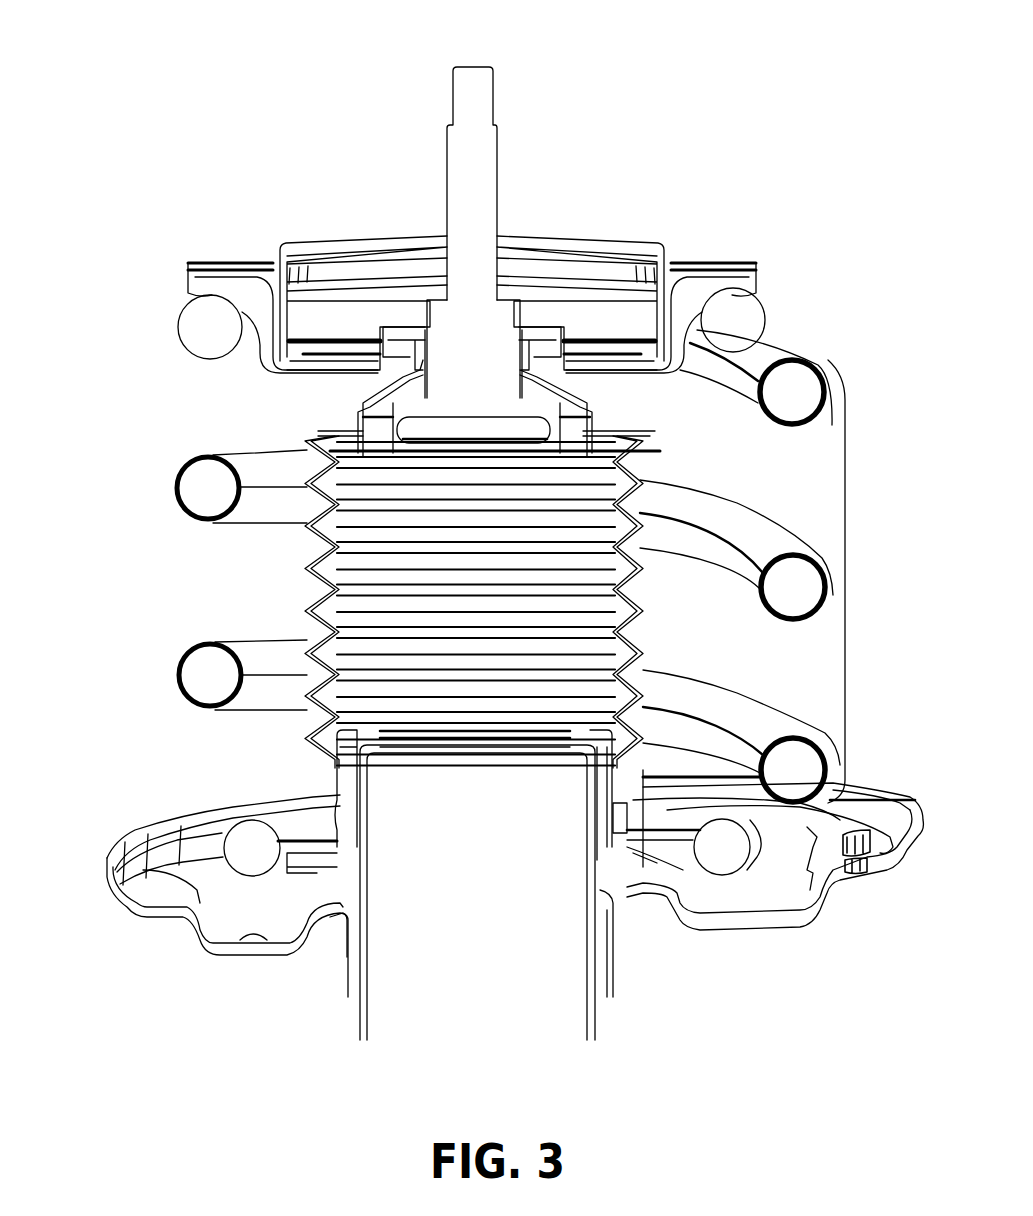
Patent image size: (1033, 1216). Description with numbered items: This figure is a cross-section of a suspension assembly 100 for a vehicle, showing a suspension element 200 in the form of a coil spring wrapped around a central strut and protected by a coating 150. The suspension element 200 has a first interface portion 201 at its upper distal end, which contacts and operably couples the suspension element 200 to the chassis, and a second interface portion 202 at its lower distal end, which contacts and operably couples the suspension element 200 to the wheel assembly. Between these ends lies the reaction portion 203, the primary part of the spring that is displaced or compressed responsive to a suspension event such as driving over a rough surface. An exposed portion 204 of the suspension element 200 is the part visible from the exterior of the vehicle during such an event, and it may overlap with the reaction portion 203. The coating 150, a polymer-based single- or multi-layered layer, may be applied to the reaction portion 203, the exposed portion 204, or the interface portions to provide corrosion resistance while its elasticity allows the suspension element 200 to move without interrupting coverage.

The suspension assembly 100 is at (118, 85).
The coating 150 is at (218, 438).
The suspension element 200 is at (150, 291).
The first interface portion 201 is at (742, 322).
The second interface portion 202 is at (250, 853).
The reaction portion 203 is at (845, 585).
The exposed portion 204 is at (163, 452).